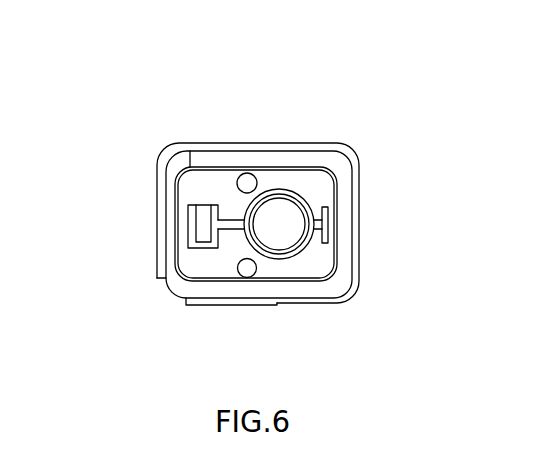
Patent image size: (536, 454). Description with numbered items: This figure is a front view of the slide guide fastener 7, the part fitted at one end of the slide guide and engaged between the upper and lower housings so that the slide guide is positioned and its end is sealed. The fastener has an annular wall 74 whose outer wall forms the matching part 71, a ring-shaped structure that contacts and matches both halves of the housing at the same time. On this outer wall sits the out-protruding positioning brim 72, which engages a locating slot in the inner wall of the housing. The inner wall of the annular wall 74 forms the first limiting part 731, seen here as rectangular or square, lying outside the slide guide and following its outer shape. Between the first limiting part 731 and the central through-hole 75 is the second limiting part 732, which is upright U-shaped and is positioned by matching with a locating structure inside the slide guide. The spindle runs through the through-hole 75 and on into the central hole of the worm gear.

The slide guide fastener 7 is at (325, 132).
The matching part 71 is at (238, 148).
The positioning brim 72 is at (210, 142).
The annular wall 74 is at (338, 186).
The first limiting part 731 is at (184, 283).
The second limiting part 732 is at (193, 236).
The through-hole 75 is at (285, 233).